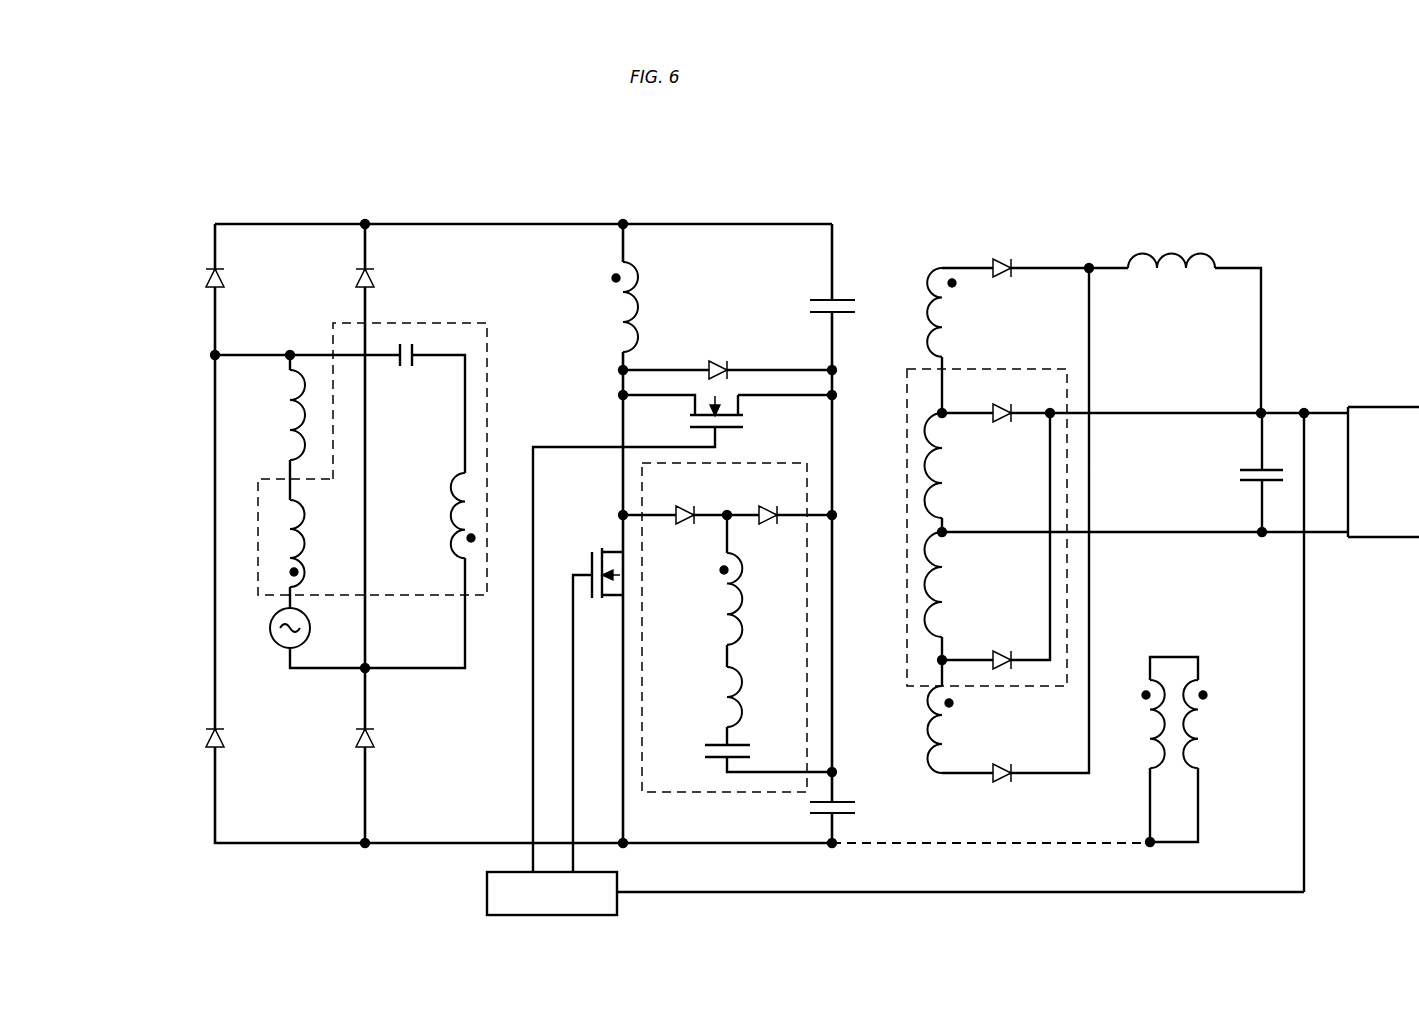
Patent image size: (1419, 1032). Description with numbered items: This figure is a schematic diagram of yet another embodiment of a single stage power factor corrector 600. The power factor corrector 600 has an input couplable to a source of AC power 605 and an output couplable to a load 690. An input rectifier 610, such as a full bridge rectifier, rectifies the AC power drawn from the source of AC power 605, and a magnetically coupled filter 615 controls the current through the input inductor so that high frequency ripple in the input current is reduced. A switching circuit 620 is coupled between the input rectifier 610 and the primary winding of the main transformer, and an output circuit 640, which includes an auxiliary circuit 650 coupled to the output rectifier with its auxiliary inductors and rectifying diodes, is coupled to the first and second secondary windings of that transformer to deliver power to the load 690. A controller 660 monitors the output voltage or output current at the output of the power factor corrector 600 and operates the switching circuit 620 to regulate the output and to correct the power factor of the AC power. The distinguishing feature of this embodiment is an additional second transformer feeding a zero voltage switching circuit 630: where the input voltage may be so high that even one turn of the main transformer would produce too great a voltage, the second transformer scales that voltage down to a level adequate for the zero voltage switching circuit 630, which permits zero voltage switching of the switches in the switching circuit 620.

The single stage power factor corrector 600 is at (530, 130).
The AC input source 605 is at (282, 644).
The input rectifier bridge 610 is at (373, 207).
The input filter 615 is at (276, 478).
The power stage 620 is at (847, 207).
The zero voltage switching circuit 630 is at (762, 463).
The output stage 640 is at (1268, 207).
The auxiliary winding circuit 650 is at (1002, 366).
The controller 660 is at (487, 894).
The load 690 is at (1390, 404).